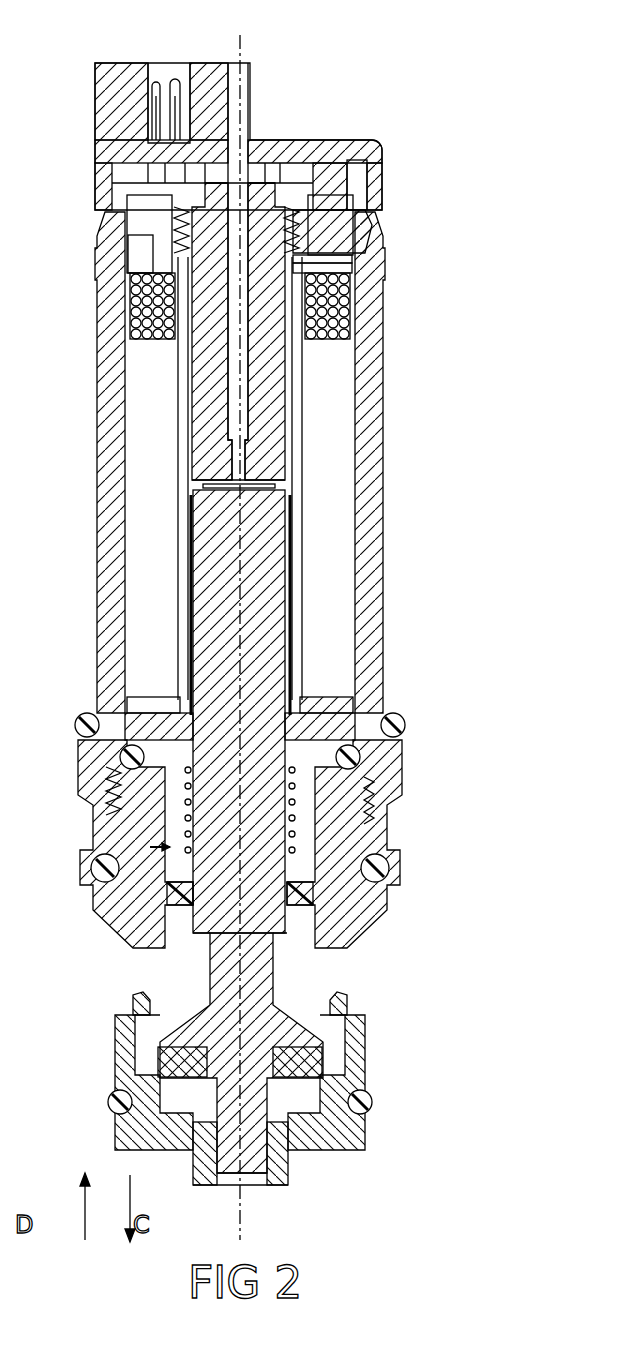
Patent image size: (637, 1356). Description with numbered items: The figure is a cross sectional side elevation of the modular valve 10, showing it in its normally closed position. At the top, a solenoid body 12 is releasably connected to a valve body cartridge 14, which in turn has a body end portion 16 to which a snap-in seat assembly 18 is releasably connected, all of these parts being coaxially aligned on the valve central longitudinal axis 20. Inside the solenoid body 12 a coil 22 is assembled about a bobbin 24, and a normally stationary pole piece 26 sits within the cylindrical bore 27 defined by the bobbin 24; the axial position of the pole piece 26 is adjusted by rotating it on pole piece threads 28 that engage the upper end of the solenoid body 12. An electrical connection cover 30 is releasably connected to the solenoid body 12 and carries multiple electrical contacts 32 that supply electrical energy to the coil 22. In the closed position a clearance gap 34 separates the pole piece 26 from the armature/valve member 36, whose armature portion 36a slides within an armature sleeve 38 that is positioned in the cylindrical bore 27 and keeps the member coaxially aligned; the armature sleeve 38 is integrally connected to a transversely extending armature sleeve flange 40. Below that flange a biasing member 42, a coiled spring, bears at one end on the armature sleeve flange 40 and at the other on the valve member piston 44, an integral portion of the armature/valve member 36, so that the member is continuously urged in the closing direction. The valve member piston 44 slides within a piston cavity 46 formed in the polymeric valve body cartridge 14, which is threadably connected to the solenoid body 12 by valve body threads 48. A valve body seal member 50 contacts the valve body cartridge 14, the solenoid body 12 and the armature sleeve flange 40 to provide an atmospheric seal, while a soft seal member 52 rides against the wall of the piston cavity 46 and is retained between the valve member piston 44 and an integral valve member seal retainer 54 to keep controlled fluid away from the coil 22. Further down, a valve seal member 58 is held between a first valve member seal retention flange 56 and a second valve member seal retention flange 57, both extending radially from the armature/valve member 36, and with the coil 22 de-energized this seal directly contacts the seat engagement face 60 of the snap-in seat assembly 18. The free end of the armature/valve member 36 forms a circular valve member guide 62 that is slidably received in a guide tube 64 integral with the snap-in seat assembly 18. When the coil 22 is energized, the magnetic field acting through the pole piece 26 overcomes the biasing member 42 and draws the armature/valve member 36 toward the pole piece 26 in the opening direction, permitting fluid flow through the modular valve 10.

The modular valve 10 is at (490, 244).
The solenoid body 12 is at (109, 612).
The valve body cartridge 14 is at (370, 900).
The body end portion 16 is at (363, 1040).
The snap-in seat assembly 18 is at (372, 1138).
The valve central longitudinal axis 20 is at (242, 52).
The coil 22 is at (133, 315).
The bobbin 24 is at (181, 456).
The pole piece 26 is at (352, 238).
The cylindrical bore 27 is at (287, 366).
The pole piece threads 28 is at (310, 207).
The electrical connection cover 30 is at (325, 152).
The electrical contacts 32 is at (172, 82).
The clearance gap 34 is at (197, 490).
The armature/valve member 36 is at (267, 600).
The armature portion 36a is at (262, 525).
The armature sleeve 38 is at (185, 668).
The armature sleeve flange 40 is at (337, 735).
The biasing member 42 is at (183, 805).
The valve member piston 44 is at (165, 870).
The piston cavity 46 is at (110, 847).
The valve body threads 48 is at (355, 800).
The valve body seal member 50 is at (352, 768).
The seal member 52 is at (392, 868).
The valve member seal retainer 54 is at (178, 945).
The first valve member seal retention flange 56 is at (300, 1035).
The second valve member seal retention flange 57 is at (283, 1085).
The valve seal member 58 is at (310, 1062).
The seat engagement face 60 is at (110, 1110).
The valve member guide 62 is at (278, 1160).
The guide tube 64 is at (277, 1187).